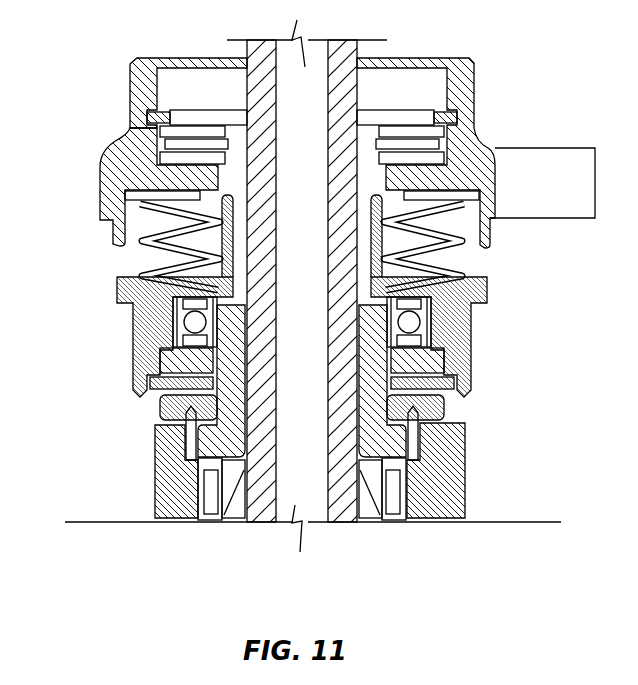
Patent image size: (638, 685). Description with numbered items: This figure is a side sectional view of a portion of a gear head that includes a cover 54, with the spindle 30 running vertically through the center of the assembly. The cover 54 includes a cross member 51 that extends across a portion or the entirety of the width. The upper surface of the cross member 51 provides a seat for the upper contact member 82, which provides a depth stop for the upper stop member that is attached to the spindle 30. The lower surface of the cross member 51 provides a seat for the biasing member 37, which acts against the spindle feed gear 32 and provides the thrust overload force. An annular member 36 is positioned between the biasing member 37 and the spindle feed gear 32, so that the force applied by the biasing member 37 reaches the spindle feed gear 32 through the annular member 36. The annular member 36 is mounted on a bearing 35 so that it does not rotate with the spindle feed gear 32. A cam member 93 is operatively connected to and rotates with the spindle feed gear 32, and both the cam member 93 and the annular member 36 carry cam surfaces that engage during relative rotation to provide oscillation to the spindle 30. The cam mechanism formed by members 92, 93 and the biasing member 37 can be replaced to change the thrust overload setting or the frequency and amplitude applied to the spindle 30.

The spindle 30 is at (293, 218).
The spindle feed gear 32 is at (173, 488).
The bearing 35 is at (192, 323).
The annular member 36 is at (150, 287).
The biasing member 37 is at (197, 237).
The cross member 51 is at (145, 177).
The cover 54 is at (463, 88).
The upper contact member 82 is at (212, 118).
The cam mechanism member 92 is at (460, 394).
The cam member 93 is at (432, 410).